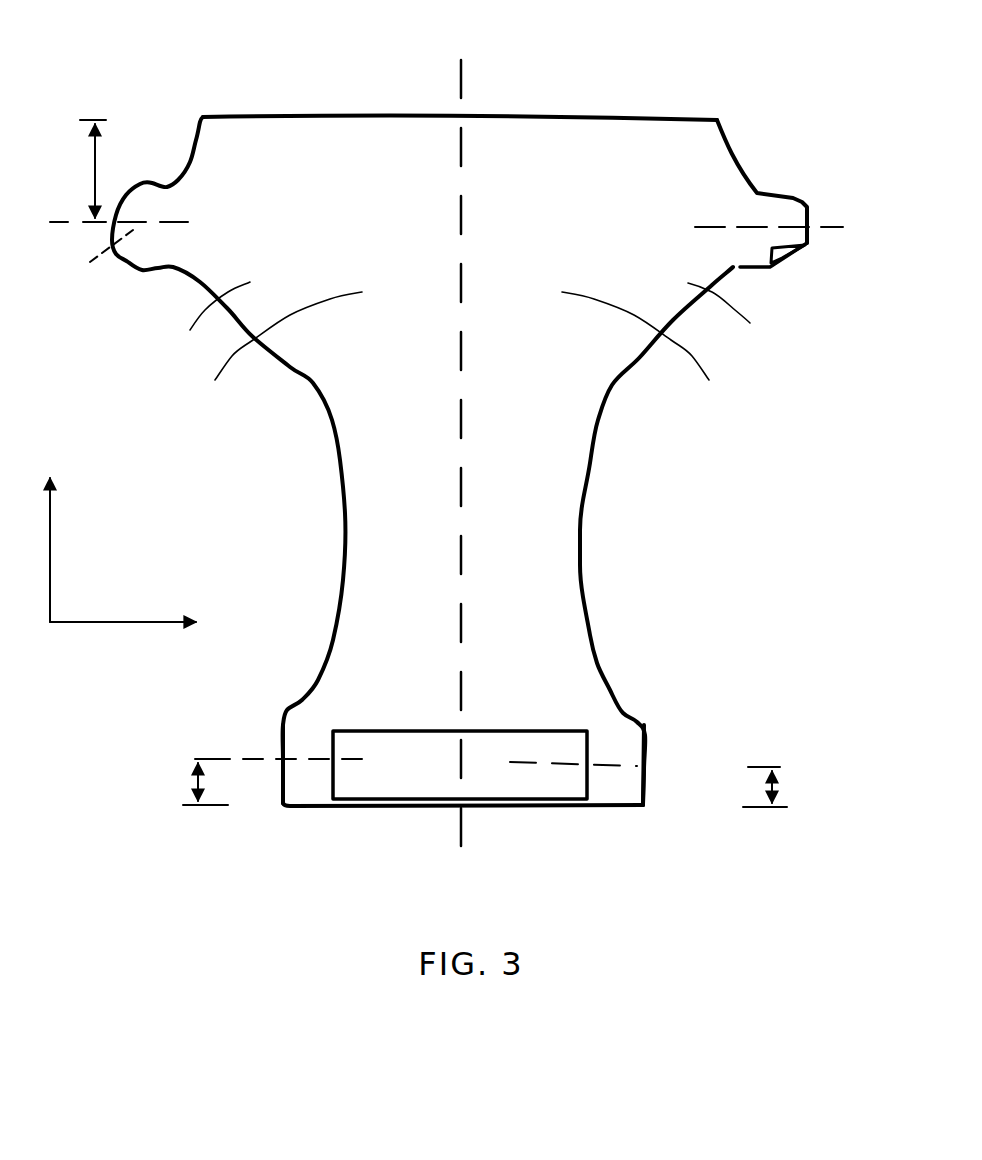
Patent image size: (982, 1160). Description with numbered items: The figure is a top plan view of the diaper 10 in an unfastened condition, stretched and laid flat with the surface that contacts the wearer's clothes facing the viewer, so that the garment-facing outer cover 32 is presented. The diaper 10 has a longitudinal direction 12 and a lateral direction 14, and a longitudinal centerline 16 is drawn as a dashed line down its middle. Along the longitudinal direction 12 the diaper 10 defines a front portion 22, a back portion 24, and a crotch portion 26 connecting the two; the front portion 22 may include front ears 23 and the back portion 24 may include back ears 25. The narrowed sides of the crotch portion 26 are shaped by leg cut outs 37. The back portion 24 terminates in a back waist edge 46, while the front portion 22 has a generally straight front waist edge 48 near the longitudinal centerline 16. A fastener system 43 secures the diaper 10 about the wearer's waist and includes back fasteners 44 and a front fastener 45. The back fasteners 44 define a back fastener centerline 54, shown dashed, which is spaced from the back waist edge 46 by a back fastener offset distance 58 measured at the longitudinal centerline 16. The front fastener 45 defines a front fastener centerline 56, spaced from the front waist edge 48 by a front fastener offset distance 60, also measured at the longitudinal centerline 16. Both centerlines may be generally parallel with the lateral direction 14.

The diaper 10 is at (258, 532).
The longitudinal direction 12 is at (50, 540).
The lateral direction 14 is at (113, 627).
The longitudinal centerline 16 is at (463, 78).
The front portion 22 is at (330, 712).
The front ears 23 is at (278, 790).
The back portion 24 is at (453, 353).
The back ears 25 is at (468, 322).
The crotch portion 26 is at (495, 527).
The outer cover 32 is at (470, 415).
The leg cut out 37 is at (340, 588).
The fastener system 43 is at (148, 288).
The back fasteners 44 is at (762, 270).
The front fastener 45 is at (444, 773).
The back waist edge 46 is at (187, 157).
The front waist edge 48 is at (323, 807).
The back fastener centerline 54 is at (55, 220).
The front fastener centerline 56 is at (210, 755).
The back fastener offset distance 58 is at (98, 160).
The front fastener offset distance 60 is at (193, 783).